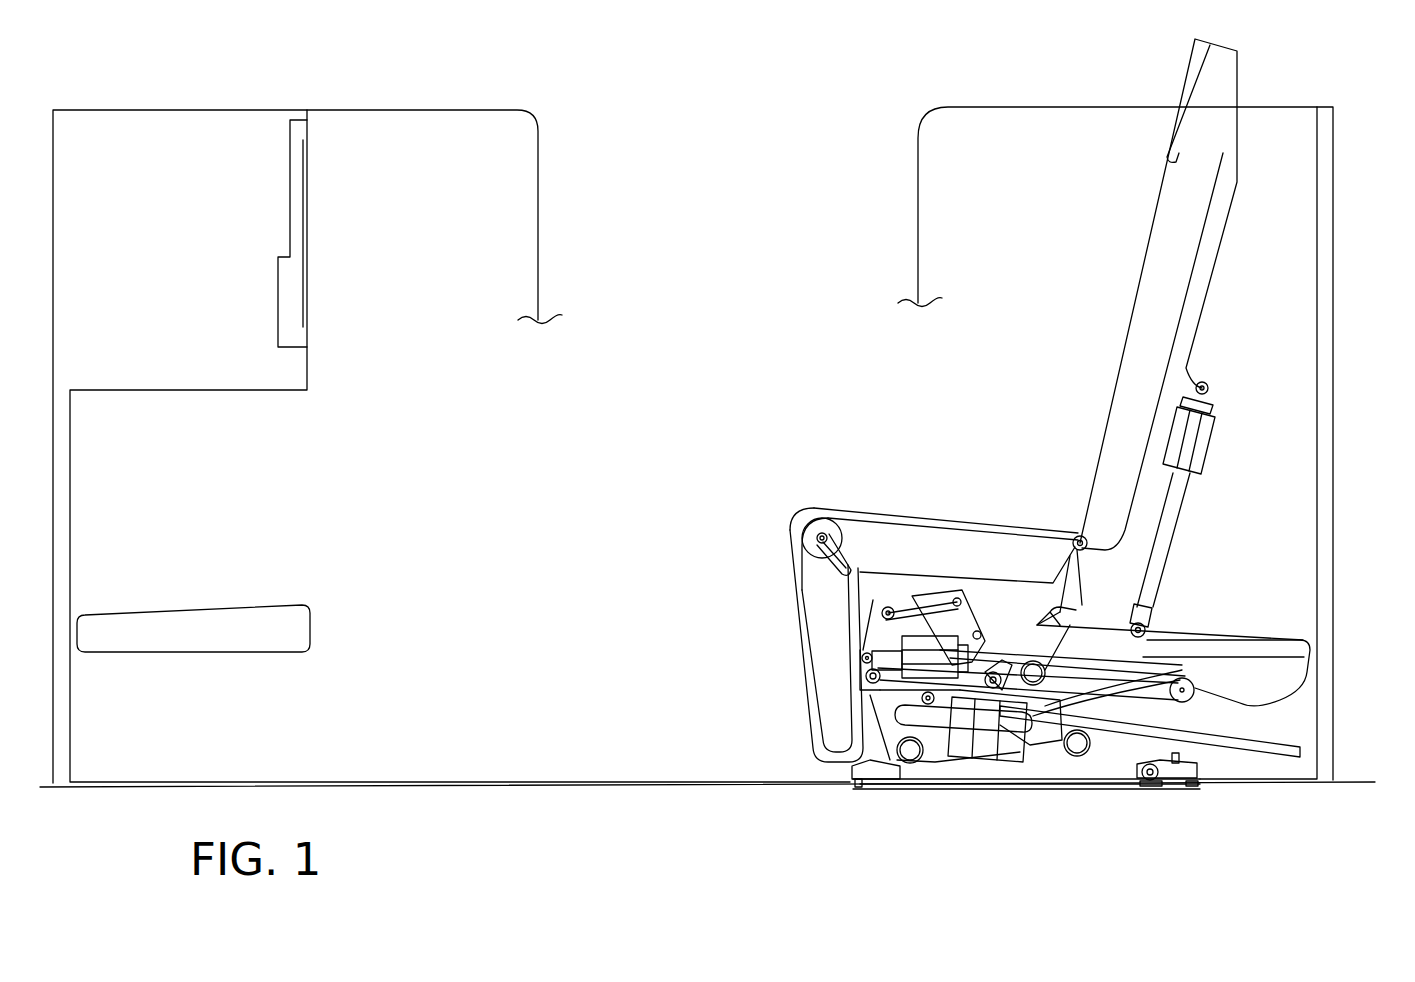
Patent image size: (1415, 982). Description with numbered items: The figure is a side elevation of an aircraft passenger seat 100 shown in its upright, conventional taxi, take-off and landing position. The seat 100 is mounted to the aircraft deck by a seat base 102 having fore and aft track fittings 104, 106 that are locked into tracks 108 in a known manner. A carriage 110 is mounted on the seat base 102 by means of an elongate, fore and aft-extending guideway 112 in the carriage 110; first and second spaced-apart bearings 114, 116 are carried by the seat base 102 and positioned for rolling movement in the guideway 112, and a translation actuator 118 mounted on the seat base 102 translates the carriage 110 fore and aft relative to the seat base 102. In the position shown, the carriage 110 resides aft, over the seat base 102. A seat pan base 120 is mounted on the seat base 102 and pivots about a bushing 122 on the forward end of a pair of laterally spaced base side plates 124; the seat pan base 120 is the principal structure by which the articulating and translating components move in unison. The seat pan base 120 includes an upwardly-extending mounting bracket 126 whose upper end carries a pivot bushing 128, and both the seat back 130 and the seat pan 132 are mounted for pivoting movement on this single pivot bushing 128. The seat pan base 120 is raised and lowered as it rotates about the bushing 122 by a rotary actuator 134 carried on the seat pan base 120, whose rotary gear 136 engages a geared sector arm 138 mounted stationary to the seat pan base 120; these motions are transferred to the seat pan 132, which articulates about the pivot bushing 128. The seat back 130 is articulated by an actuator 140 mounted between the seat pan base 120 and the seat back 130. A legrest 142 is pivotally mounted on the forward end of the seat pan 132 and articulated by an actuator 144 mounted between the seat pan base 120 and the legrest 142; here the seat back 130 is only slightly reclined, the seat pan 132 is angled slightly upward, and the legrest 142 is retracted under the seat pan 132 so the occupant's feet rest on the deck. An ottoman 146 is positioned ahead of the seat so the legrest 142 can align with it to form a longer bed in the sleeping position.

The passenger seat 100 is at (732, 173).
The seat base 102 is at (1038, 763).
The fore track fitting 104 is at (858, 787).
The aft track fitting 106 is at (1192, 787).
The tracks 108 is at (1030, 787).
The carriage 110 is at (898, 690).
The guideway 112 is at (1253, 640).
The first bearing 114 is at (866, 655).
The second bearing 116 is at (1010, 655).
The translation actuator 118 is at (1073, 753).
The seat pan base 120 is at (1097, 633).
The bushing 122 is at (1193, 688).
The base side plates 124 is at (1170, 640).
The mounting bracket 126 is at (1072, 625).
The pivot bushing 128 is at (1078, 540).
The seat back 130 is at (1143, 313).
The seat pan 132 is at (877, 542).
The rotary actuator 134 is at (905, 755).
The rotary gear 136 is at (985, 700).
The geared sector arm 138 is at (935, 640).
The actuator 140 is at (1203, 442).
The legrest 142 is at (823, 652).
The actuator 144 is at (885, 608).
The ottoman 146 is at (255, 615).